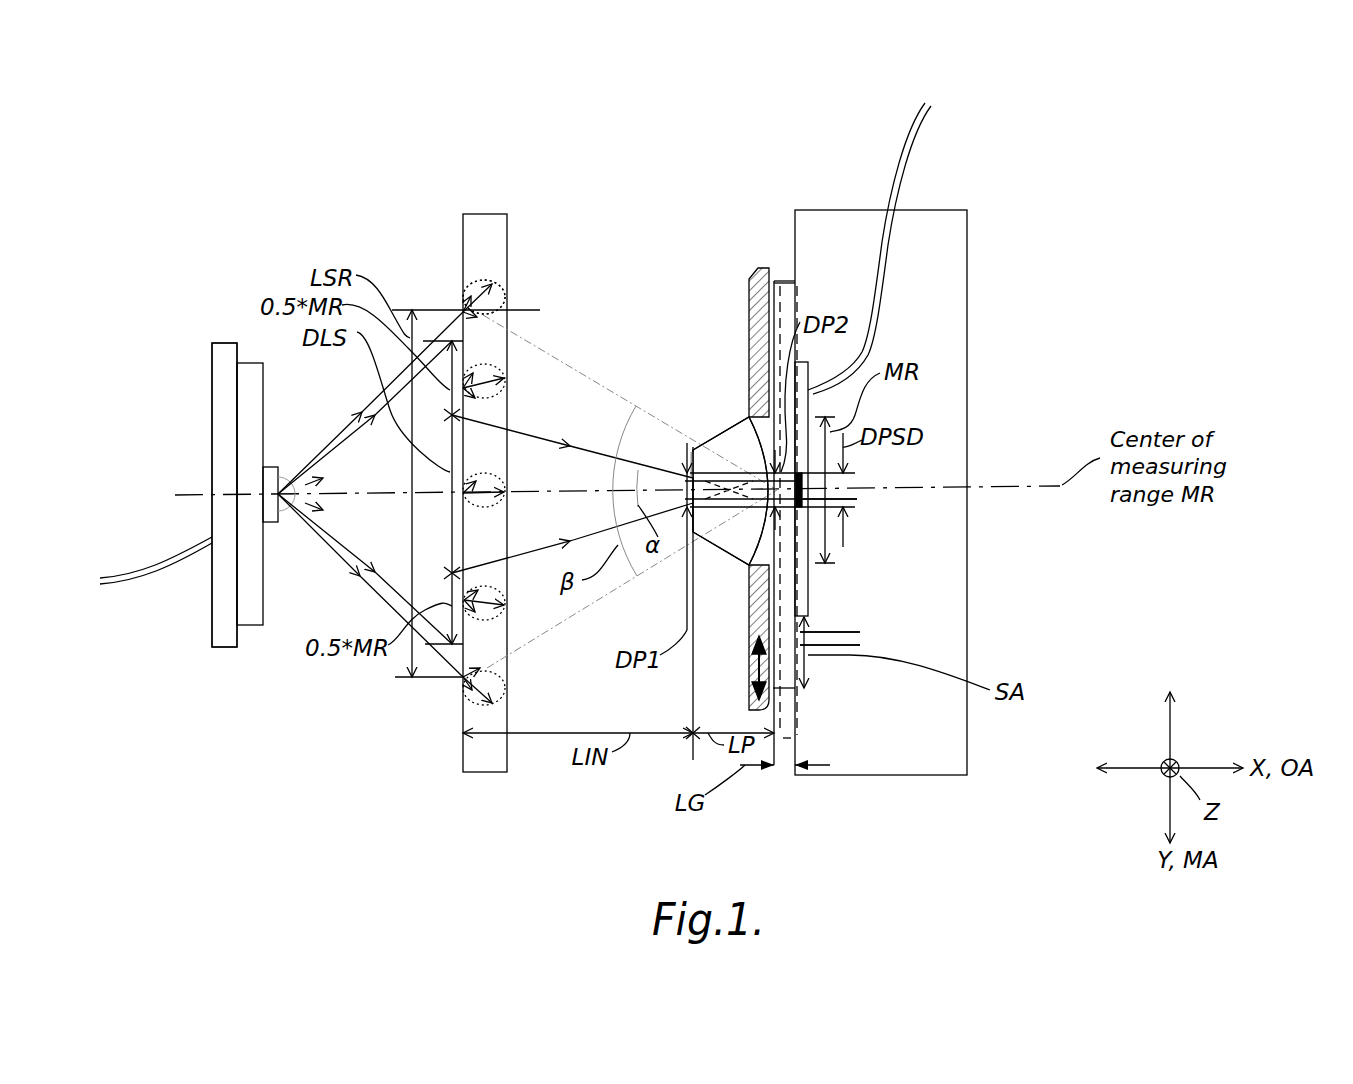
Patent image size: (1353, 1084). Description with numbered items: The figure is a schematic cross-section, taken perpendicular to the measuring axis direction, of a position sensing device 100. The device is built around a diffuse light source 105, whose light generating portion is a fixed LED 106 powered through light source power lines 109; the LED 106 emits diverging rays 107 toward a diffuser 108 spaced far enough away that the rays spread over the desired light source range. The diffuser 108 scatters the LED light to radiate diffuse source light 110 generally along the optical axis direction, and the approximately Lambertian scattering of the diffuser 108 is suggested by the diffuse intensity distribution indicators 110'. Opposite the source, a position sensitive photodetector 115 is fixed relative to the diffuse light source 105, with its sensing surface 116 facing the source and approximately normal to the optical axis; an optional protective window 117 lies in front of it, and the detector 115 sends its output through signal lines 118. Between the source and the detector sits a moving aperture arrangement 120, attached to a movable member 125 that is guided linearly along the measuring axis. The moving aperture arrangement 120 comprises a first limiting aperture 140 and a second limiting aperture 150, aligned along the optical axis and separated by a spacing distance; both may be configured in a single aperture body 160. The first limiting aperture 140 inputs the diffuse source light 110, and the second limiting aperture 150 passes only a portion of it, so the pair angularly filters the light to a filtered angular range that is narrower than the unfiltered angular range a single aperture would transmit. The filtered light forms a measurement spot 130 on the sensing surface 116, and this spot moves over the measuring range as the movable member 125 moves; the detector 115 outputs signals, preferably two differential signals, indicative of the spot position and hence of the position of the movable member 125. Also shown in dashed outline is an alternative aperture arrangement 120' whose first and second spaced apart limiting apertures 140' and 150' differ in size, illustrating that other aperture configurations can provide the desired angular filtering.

The position sensing device 100 is at (1130, 234).
The diffuse light source 105 is at (262, 163).
The fixed LED 106 is at (272, 462).
The diverging rays 107 is at (298, 536).
The diffuser 108 is at (463, 225).
The light source power lines 109 is at (140, 590).
The diffuse source light 110 is at (630, 415).
The diffuse intensity distribution indicators 110' is at (580, 193).
The position sensitive photodetector 115 is at (947, 228).
The sensing surface 116 is at (805, 567).
The protective window 117 is at (795, 278).
The signal lines 118 is at (925, 104).
The moving aperture arrangement 120 is at (723, 337).
The alternative aperture arrangement 120' is at (950, 612).
The movable member 125 is at (773, 688).
The measurement spot 130 is at (803, 499).
The first limiting aperture 140 is at (709, 363).
The first limiting aperture of alternative arrangement 140' is at (915, 626).
The second limiting aperture 150 is at (768, 436).
The second limiting aperture of alternative arrangement 150' is at (915, 606).
The aperture body 160 is at (752, 620).